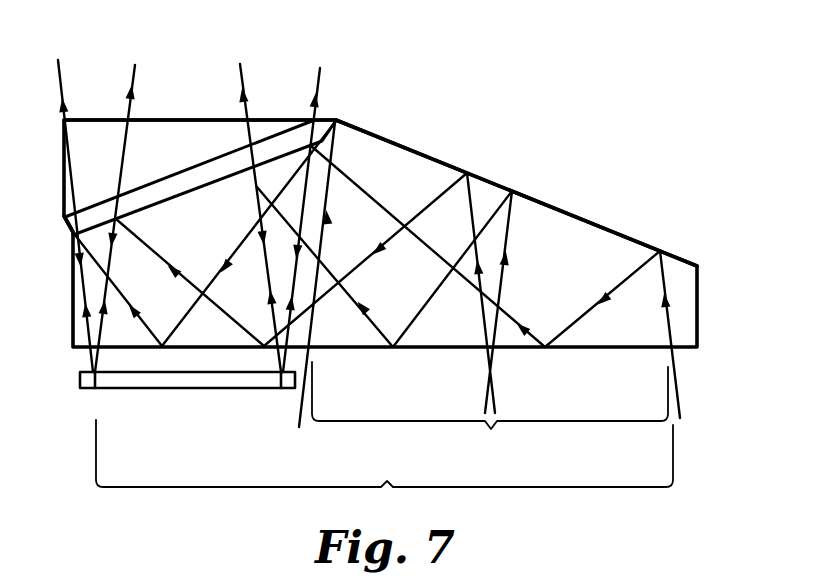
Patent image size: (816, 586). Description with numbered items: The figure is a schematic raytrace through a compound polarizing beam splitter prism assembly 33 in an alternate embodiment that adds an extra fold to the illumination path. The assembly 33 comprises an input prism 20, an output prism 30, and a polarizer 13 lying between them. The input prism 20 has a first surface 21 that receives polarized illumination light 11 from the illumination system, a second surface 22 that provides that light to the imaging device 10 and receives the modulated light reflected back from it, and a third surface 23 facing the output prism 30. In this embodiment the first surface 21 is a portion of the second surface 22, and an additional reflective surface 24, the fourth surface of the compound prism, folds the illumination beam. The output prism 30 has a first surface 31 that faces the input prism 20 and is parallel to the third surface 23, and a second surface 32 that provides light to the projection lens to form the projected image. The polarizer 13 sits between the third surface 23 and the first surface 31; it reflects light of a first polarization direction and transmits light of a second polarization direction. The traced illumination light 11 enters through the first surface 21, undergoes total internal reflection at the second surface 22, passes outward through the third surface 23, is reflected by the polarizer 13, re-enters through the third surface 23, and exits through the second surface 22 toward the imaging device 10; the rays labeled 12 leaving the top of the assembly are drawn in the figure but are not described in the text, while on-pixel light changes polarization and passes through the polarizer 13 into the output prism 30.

The imaging device 10 is at (181, 389).
The polarized illumination light 11 is at (299, 428).
The emitted light 12 is at (57, 70).
The polarizer 13 is at (66, 229).
The input prism 20 is at (563, 230).
The first surface 21 is at (490, 316).
The second surface 22 is at (384, 470).
The third surface 23 is at (170, 200).
The additional reflective surface 24 is at (440, 162).
The output prism 30 is at (88, 128).
The first surface 31 is at (146, 182).
The second surface 32 is at (172, 118).
The prism assembly 33 is at (590, 92).